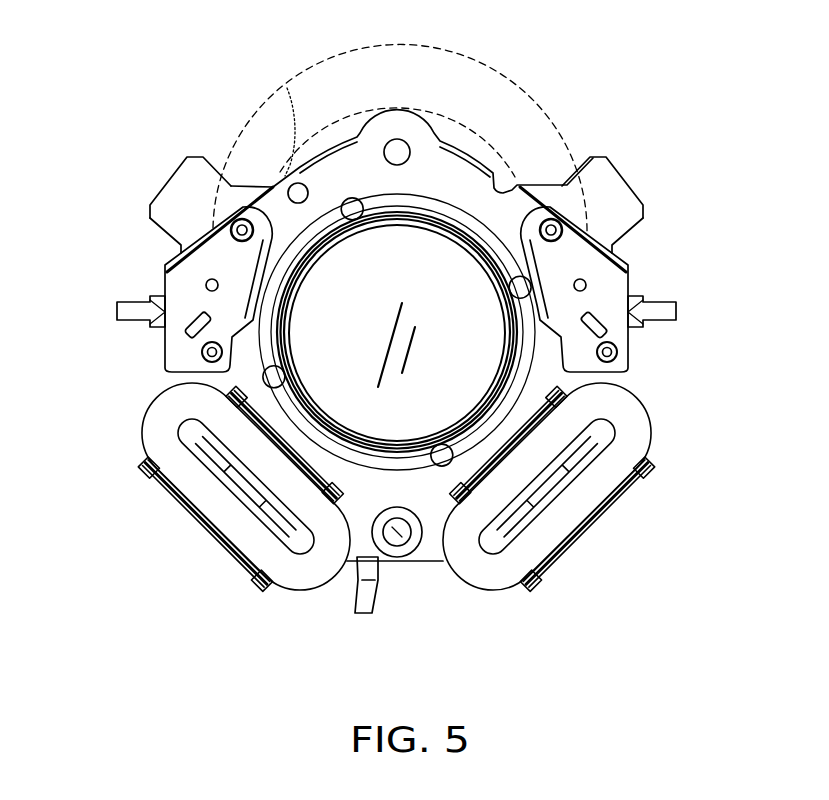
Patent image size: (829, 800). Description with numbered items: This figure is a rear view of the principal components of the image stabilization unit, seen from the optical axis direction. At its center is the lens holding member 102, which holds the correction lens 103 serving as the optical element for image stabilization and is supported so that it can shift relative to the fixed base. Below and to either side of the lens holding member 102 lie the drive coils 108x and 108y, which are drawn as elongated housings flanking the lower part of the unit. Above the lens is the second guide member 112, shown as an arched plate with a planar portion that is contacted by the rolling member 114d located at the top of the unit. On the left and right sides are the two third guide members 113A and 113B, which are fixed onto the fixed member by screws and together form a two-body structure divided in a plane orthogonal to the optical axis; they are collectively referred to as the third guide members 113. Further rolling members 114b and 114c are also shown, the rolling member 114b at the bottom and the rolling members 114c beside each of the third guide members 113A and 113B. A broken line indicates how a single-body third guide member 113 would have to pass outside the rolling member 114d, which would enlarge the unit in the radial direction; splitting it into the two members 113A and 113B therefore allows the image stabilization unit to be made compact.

The lens holding member 102 is at (372, 505).
The correction lens 103 is at (325, 348).
The drive coil 108x is at (507, 577).
The drive coil 108y is at (290, 568).
The second guide member 112 is at (333, 176).
The third guide members 113 is at (533, 153).
The third guide member 113A is at (608, 300).
The third guide member 113B is at (182, 278).
The rolling member 114b is at (402, 540).
The rolling member 114c is at (165, 345).
The rolling member 114d is at (408, 141).